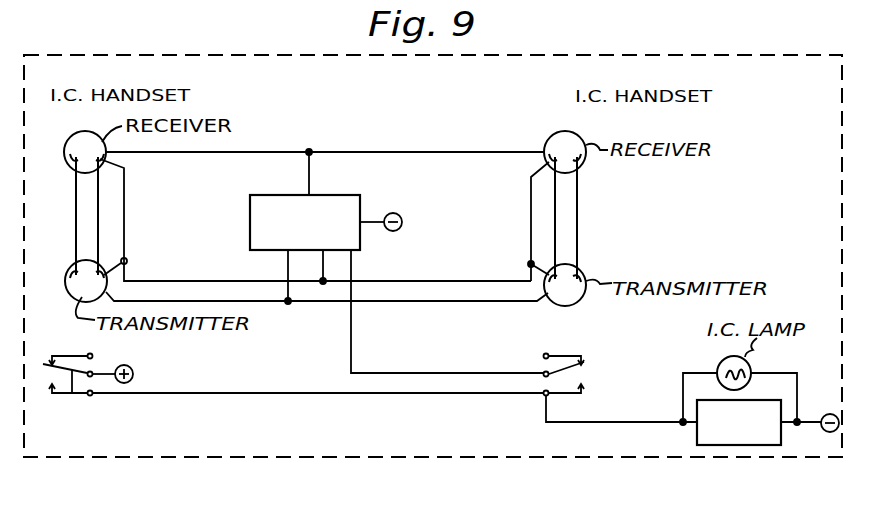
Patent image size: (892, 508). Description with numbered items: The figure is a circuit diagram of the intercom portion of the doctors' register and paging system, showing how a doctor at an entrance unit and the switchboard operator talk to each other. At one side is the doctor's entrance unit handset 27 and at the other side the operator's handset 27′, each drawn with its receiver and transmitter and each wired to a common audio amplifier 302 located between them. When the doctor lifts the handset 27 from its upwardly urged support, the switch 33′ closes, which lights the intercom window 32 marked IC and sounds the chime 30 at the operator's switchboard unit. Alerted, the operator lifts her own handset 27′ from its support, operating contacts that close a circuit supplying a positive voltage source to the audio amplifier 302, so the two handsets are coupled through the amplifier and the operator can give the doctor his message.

The handset 27′ is at (75, 215).
The handset 27 is at (578, 197).
The audio amplifier 302 is at (340, 195).
The switch 33′ is at (566, 370).
The intercom window 32 is at (750, 368).
The chime 30 is at (730, 445).